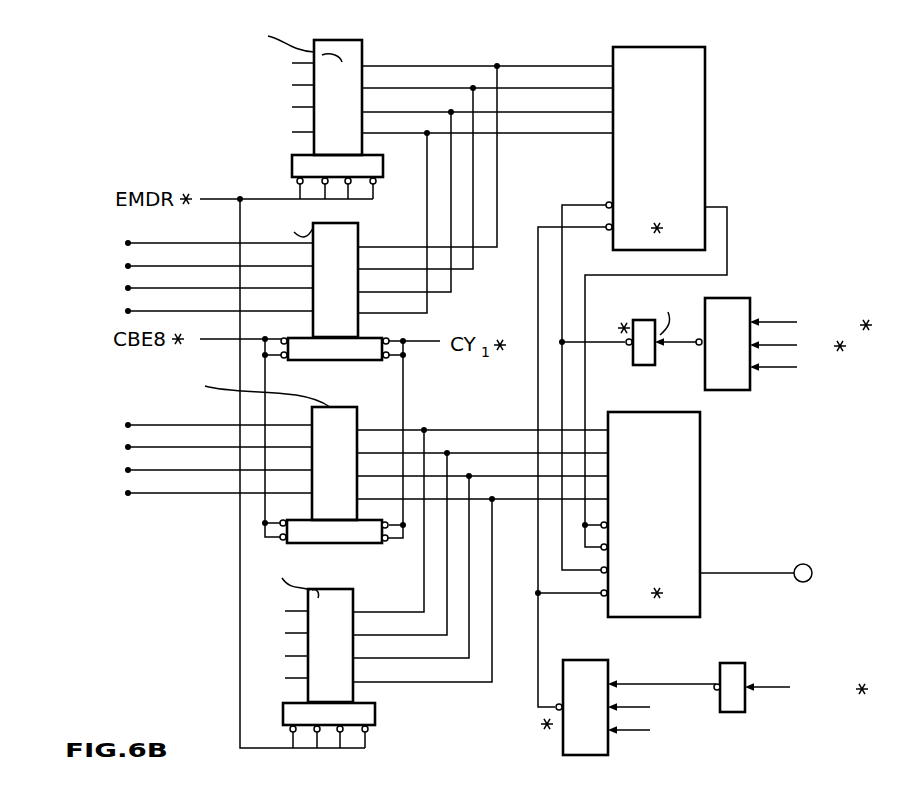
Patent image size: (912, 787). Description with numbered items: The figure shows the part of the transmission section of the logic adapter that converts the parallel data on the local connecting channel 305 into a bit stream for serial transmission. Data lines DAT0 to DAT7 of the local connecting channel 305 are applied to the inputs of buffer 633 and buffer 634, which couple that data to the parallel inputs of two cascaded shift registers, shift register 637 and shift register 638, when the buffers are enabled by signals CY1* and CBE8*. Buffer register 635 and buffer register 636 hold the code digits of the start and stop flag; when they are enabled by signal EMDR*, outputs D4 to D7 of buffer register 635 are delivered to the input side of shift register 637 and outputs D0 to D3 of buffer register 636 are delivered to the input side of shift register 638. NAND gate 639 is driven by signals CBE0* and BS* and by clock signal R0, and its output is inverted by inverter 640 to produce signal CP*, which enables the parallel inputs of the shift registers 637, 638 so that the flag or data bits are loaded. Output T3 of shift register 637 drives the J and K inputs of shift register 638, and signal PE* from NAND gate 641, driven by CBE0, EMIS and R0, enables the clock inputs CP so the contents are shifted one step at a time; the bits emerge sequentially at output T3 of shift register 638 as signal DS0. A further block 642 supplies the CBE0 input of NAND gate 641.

The local connecting channel 305 is at (104, 312).
The buffer 633 is at (332, 405).
The buffer 634 is at (358, 226).
The buffer register 635 is at (352, 42).
The buffer register 636 is at (340, 592).
The shift register 637 is at (707, 60).
The shift register 638 is at (700, 470).
The NAND gate 639 is at (750, 309).
The inverter 640 is at (648, 332).
The NAND gate 641 is at (593, 660).
The logic block 642 is at (745, 668).